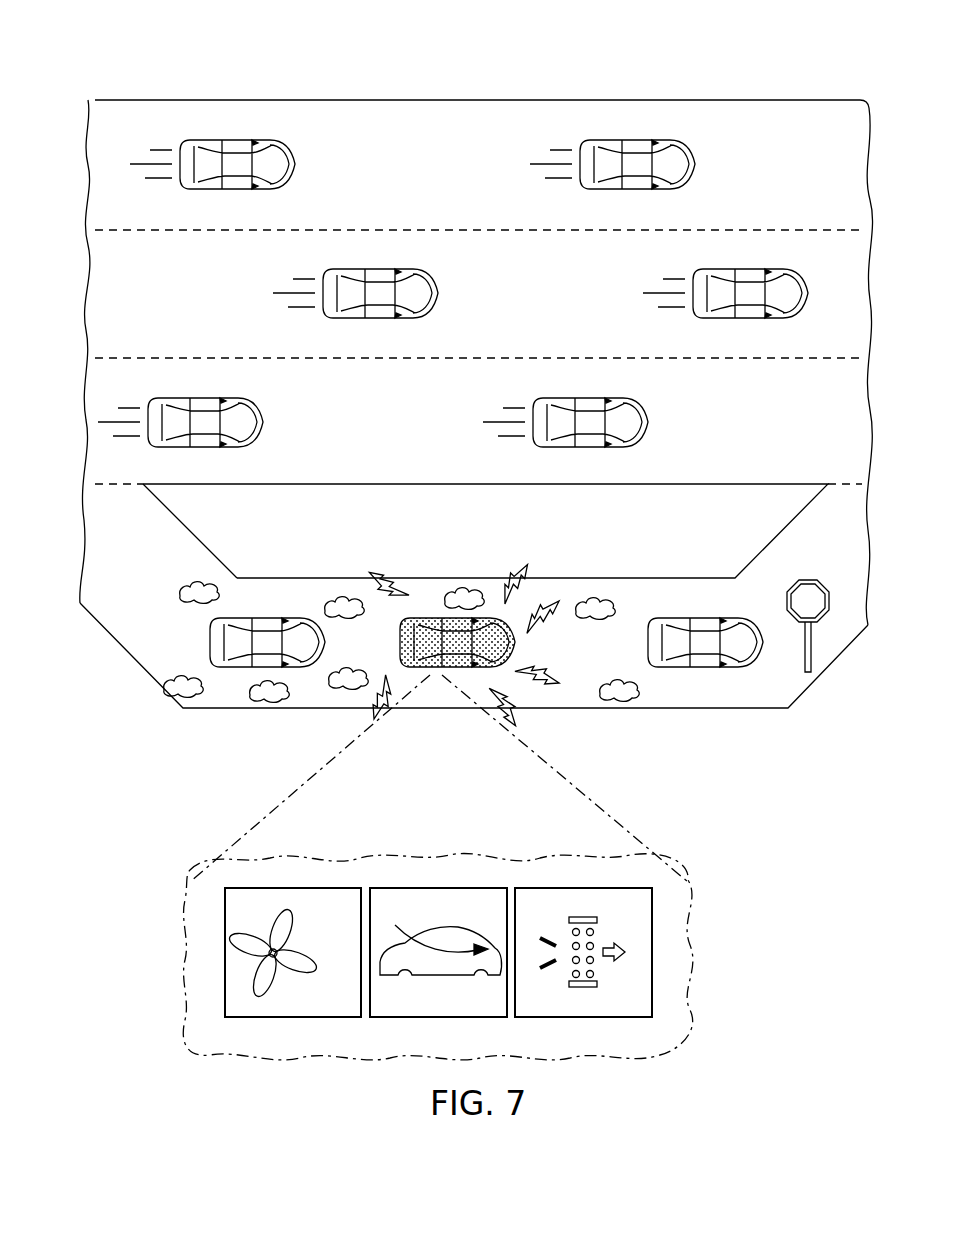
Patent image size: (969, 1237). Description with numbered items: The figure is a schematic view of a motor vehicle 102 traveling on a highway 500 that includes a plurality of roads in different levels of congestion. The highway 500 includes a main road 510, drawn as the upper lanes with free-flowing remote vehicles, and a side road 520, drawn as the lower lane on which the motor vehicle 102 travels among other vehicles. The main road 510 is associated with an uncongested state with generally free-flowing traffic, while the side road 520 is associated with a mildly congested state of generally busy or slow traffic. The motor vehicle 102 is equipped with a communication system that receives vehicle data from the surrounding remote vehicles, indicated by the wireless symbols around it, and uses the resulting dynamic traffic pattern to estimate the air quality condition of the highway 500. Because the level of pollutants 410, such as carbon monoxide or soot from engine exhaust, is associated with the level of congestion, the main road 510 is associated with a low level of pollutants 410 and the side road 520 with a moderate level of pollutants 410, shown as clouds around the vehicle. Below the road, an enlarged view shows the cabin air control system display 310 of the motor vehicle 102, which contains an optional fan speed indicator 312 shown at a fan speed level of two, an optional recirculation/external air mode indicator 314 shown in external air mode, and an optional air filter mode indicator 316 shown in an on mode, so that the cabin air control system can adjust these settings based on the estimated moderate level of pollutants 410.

The highway 500 is at (312, 76).
The motor vehicle 102 is at (432, 617).
The pollutants 410 is at (594, 597).
The main road 510 is at (540, 484).
The side road 520 is at (205, 542).
The cabin air control system display 310 is at (700, 958).
The fan speed indicator 312 is at (298, 888).
The recirculation/external air mode indicator 314 is at (430, 888).
The air filter mode indicator 316 is at (575, 888).